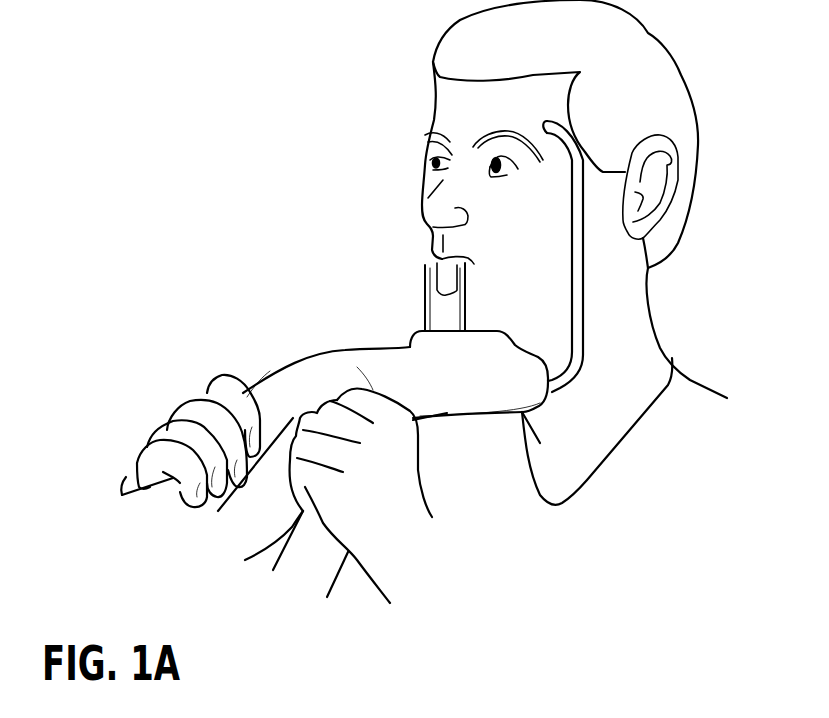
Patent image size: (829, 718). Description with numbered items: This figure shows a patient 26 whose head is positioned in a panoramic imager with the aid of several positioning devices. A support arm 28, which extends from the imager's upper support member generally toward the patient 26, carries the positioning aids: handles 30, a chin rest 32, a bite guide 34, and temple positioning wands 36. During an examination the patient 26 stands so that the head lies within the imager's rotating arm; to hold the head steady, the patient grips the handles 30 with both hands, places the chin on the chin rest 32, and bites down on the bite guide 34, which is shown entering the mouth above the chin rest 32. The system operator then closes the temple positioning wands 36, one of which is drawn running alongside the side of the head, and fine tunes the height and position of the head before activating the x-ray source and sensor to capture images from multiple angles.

The patient 26 is at (703, 380).
The support arm 28 is at (128, 491).
The handles 30 is at (245, 560).
The chin rest 32 is at (412, 332).
The bite guide 34 is at (425, 268).
The temple positioning wands 36 is at (570, 253).